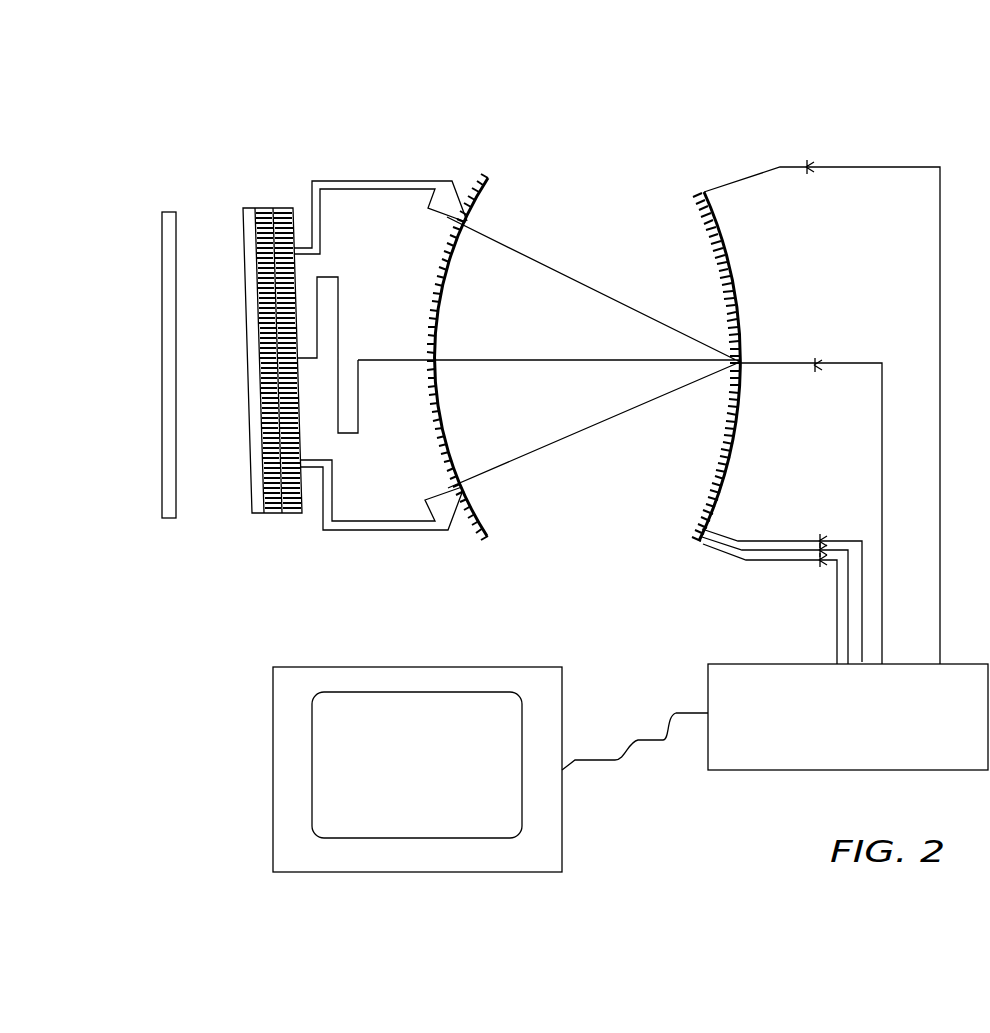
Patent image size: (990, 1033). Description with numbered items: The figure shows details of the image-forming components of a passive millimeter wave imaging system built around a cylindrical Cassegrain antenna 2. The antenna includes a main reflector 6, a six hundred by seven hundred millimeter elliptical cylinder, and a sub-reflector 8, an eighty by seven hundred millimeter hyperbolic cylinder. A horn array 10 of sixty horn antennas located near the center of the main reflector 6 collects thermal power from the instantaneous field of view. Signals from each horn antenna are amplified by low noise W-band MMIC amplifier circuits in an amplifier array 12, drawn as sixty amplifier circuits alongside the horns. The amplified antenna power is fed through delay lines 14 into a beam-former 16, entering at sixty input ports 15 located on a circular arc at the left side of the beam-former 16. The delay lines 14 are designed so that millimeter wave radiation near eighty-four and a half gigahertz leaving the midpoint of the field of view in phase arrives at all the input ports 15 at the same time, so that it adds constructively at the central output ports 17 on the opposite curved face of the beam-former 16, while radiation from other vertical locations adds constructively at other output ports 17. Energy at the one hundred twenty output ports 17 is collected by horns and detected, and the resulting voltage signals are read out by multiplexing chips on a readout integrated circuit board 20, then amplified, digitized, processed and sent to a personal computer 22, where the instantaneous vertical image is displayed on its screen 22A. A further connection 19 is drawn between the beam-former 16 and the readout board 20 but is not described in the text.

The cylindrical Cassegrain antenna 2 is at (226, 611).
The main reflector 6 is at (258, 515).
The sub-reflector 8 is at (178, 520).
The horn array 10 is at (271, 196).
The low noise amplifier array 12 is at (291, 196).
The delay lines 14 is at (395, 563).
The beam-former input ports 15 is at (503, 166).
The beam-former 16 is at (607, 215).
The output ports 17 is at (702, 559).
The signal lines 19 is at (822, 157).
The readout integrated circuit board 20 is at (730, 662).
The personal computer 22 is at (450, 667).
The screen 22A is at (330, 783).